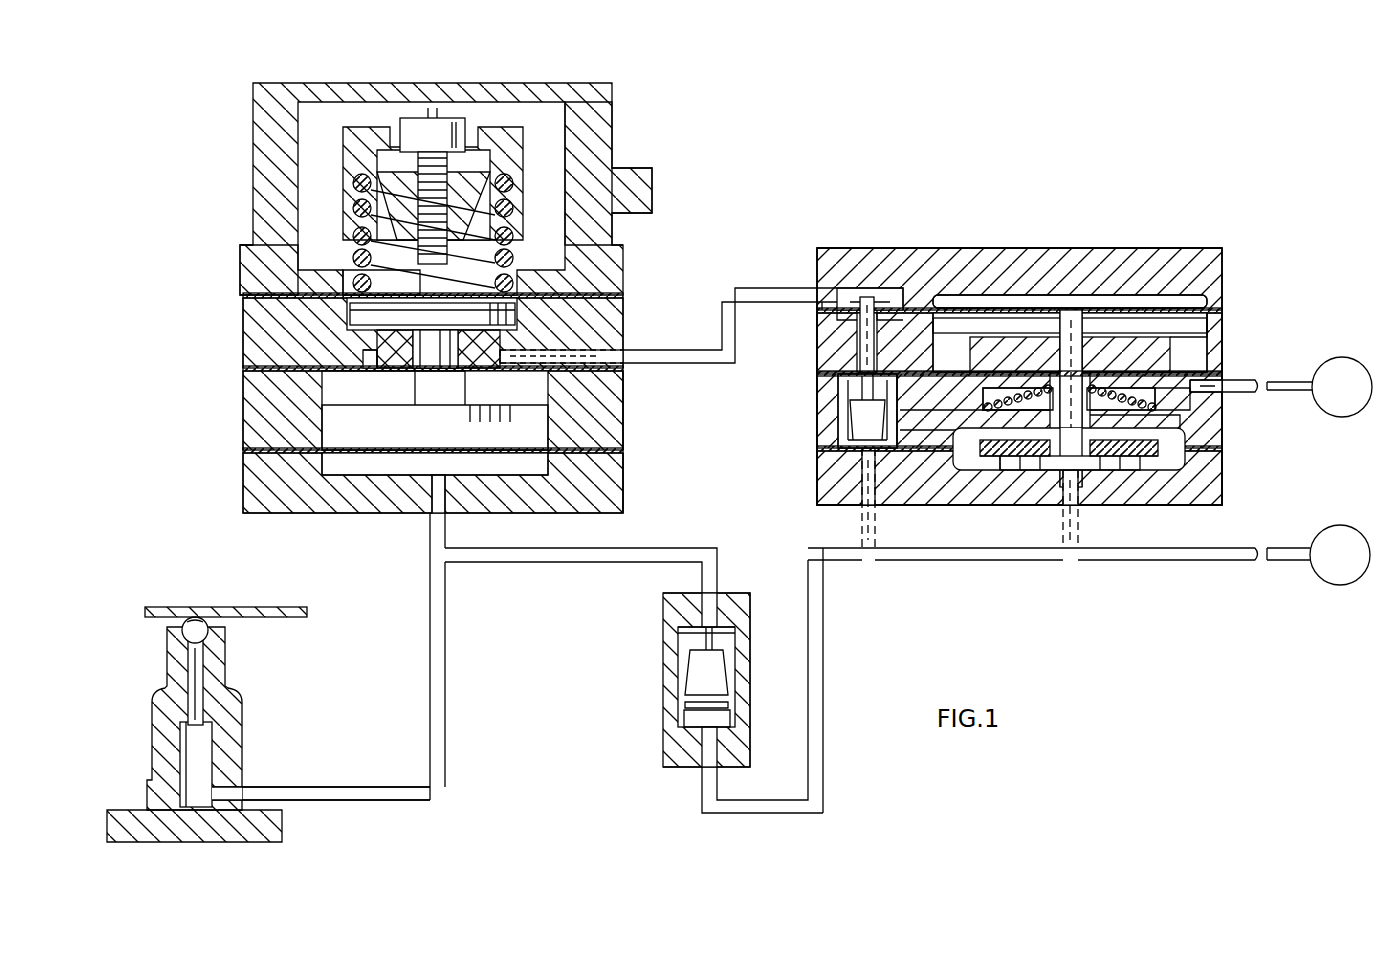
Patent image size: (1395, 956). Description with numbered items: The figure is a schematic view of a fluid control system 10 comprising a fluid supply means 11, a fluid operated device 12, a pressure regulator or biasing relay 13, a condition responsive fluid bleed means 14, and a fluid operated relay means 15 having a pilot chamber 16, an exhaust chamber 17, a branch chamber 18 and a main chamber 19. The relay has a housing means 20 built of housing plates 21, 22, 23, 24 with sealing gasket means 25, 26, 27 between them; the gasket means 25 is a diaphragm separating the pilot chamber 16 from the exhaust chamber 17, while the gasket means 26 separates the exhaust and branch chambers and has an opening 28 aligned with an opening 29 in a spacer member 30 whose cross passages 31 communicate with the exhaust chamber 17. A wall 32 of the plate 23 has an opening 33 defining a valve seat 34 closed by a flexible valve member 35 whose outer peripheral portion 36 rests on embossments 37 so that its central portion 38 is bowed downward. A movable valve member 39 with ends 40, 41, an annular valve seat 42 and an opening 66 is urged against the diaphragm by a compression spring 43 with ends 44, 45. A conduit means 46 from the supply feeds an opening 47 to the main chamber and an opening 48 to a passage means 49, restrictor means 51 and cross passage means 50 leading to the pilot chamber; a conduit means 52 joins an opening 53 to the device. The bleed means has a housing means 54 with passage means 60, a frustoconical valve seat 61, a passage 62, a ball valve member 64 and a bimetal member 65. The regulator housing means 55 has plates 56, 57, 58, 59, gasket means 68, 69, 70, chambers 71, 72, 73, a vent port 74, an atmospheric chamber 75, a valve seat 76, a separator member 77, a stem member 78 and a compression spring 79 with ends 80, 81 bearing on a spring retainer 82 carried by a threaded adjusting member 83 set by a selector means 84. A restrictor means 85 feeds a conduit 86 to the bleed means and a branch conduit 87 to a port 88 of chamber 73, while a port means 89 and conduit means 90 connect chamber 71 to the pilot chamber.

The fluid control system 10 is at (1195, 168).
The fluid supply means 11 is at (1322, 580).
The fluid operated device 12 is at (1340, 357).
The pressure regulator 13 is at (238, 135).
The condition responsive fluid bleed means 14 is at (278, 686).
The fluid operated relay means 15 is at (1224, 250).
The pilot chamber 16 is at (1190, 302).
The exhaust chamber 17 is at (1180, 345).
The branch chamber 18 is at (1165, 395).
The main chamber 19 is at (1170, 455).
The housing means 20 is at (940, 248).
The housing plate 21 is at (820, 265).
The housing plate 22 is at (820, 318).
The housing plate 23 is at (825, 395).
The housing plate 24 is at (820, 485).
The sealing gasket means 25 is at (835, 320).
The sealing gasket means 26 is at (820, 375).
The sealing gasket means 27 is at (825, 450).
The opening 28 is at (1062, 362).
The opening 29 is at (1060, 335).
The spacer member 30 is at (1085, 345).
The cross passages 31 is at (1130, 325).
The wall 32 is at (1160, 446).
The opening 33 is at (1112, 458).
The valve seat 34 is at (1088, 470).
The flexible valve member 35 is at (1165, 480).
The outer peripheral portion 36 is at (985, 462).
The embossments 37 is at (1000, 458).
The central portion 38 is at (1042, 470).
The movable valve member 39 is at (990, 418).
The end 40 is at (1084, 362).
The end 41 is at (1060, 470).
The annular valve seat 42 is at (955, 345).
The compression spring 43 is at (962, 390).
The end 44 is at (1140, 408).
The end 45 is at (1118, 395).
The conduit means 46 is at (1140, 562).
The opening 47 is at (1063, 490).
The opening 48 is at (860, 485).
The passage means 49 is at (860, 345).
The cross passage means 50 is at (852, 290).
The restrictor means 51 is at (850, 415).
The conduit means 52 is at (1250, 382).
The opening 53 is at (1200, 383).
The housing means 54 is at (155, 730).
The housing means 55 is at (624, 270).
The housing plate 56 is at (262, 270).
The housing plate 57 is at (384, 333).
The housing plate 58 is at (250, 420).
The housing plate 59 is at (250, 490).
The passage means 60 is at (212, 745).
The frustoconical valve seat 61 is at (188, 640).
The passage 62 is at (215, 787).
The ball valve member 64 is at (195, 617).
The bimetal member 65 is at (258, 607).
The opening 66 is at (1012, 400).
The gasket means 68 is at (250, 296).
The gasket means 69 is at (250, 370).
The gasket means 70 is at (250, 452).
The chamber 71 is at (370, 355).
The chamber 72 is at (330, 392).
The chamber 73 is at (355, 470).
The vent port 74 is at (650, 468).
The atmospheric chamber 75 is at (345, 255).
The valve seat 76 is at (470, 355).
The separator member 77 is at (643, 410).
The stem member 78 is at (428, 345).
The compression spring 79 is at (352, 205).
The end 80 is at (352, 312).
The end 81 is at (513, 200).
The spring retainer 82 is at (567, 222).
The threaded adjusting member 83 is at (430, 128).
The cam operated set point selector means 84 is at (560, 128).
The restrictor means 85 is at (665, 672).
The conduit 86 is at (560, 562).
The branch conduit 87 is at (430, 535).
The port 88 is at (447, 500).
The port means 89 is at (560, 352).
The conduit means 90 is at (738, 288).